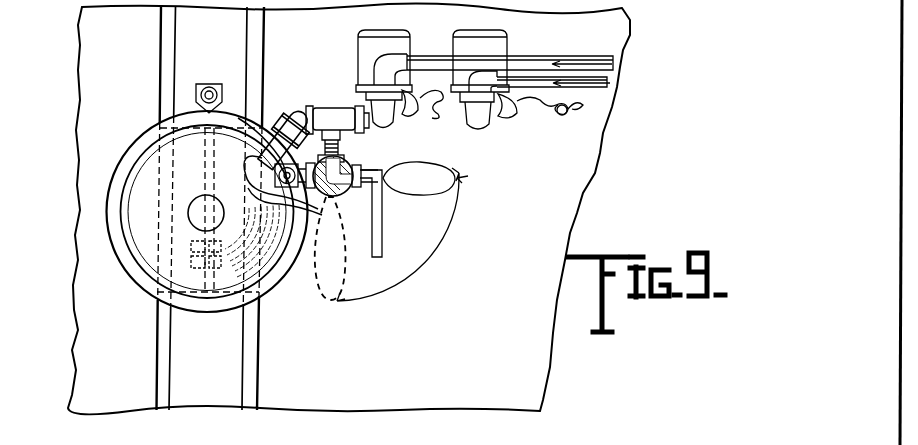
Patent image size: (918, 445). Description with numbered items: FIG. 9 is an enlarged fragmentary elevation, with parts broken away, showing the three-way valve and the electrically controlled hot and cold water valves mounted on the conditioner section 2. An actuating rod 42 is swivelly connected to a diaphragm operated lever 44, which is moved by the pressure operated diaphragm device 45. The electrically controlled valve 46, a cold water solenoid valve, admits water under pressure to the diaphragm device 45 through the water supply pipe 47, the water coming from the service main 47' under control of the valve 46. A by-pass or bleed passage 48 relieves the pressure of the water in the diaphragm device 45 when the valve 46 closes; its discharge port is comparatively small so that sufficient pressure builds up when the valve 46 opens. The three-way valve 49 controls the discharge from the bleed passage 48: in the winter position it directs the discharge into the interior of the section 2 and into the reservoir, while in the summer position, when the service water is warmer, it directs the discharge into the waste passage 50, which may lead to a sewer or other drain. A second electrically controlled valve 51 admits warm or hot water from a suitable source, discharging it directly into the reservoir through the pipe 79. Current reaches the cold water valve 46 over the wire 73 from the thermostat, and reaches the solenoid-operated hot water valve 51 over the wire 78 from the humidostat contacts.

The section 2 is at (88, 286).
The actuating rod 42 is at (212, 84).
The diaphragm operated lever 44 is at (207, 111).
The pressure operated diaphragm device 45 is at (152, 168).
The electrically controlled valve 46 is at (368, 48).
The water supply pipe 47 is at (284, 127).
The service main 47' is at (574, 61).
The bleed passage 48 is at (342, 147).
The three-way valve 49 is at (337, 190).
The waste passage 50 is at (382, 240).
The second electrically controlled valve 51 is at (492, 52).
The wire 73 is at (430, 115).
The wire 78 is at (540, 118).
The pipe 79 is at (270, 197).